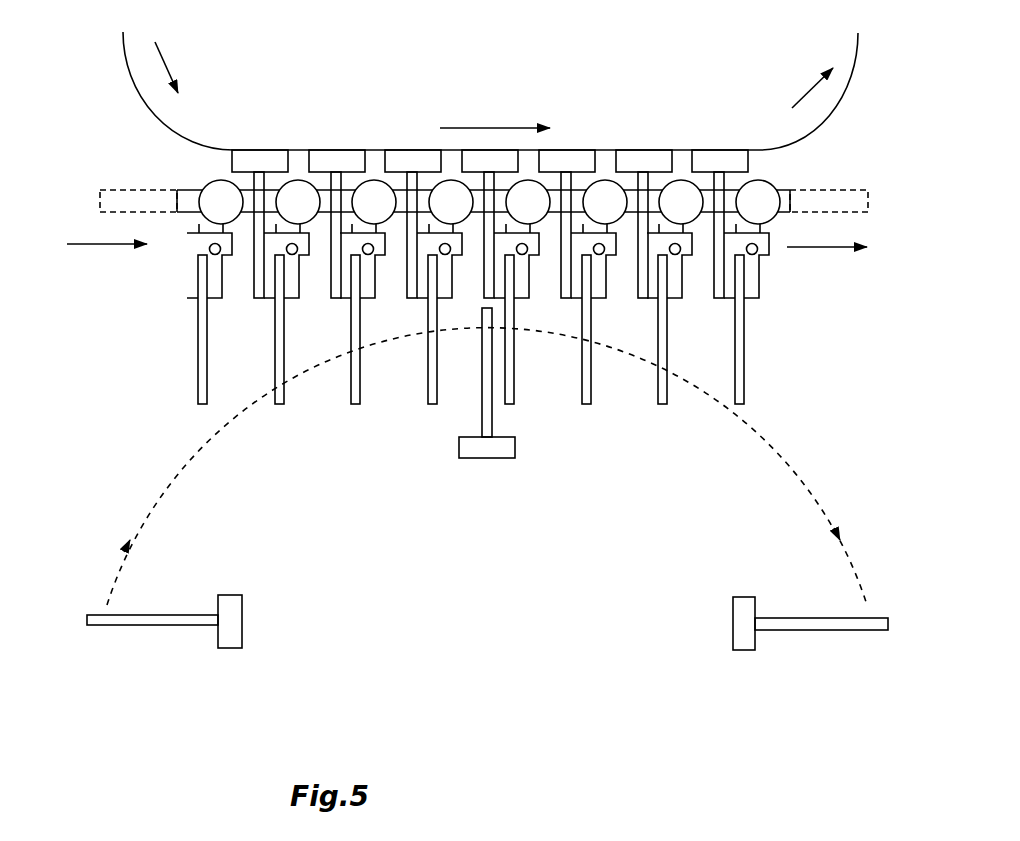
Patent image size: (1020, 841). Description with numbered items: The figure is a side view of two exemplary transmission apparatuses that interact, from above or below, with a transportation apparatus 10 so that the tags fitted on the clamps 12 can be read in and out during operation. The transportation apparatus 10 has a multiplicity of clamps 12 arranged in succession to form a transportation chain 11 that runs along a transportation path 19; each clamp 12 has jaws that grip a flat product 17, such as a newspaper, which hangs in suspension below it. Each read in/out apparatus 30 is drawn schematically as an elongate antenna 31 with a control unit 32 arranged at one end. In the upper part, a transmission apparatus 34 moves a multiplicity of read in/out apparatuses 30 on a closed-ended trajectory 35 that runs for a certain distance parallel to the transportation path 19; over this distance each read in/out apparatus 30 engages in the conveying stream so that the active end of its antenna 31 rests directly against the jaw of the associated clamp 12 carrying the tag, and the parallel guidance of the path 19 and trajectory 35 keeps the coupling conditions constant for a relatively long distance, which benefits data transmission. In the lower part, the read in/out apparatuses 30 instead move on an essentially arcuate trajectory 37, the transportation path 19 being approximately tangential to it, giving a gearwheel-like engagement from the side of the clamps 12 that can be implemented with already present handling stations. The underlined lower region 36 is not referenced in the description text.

The transportation apparatus 10 is at (160, 308).
The transportation chain 11 is at (843, 200).
The clamp 12 is at (352, 242).
The flat product 17 is at (355, 400).
The transportation path 19 is at (820, 248).
The read in/out apparatus 30 is at (332, 135).
The antenna 31 is at (334, 297).
The control unit 32 is at (323, 160).
The transmission apparatus 34 is at (460, 78).
The closed-ended trajectory 35 is at (147, 98).
The lower conveying section 36 is at (723, 530).
The arcuate trajectory 37 is at (815, 492).